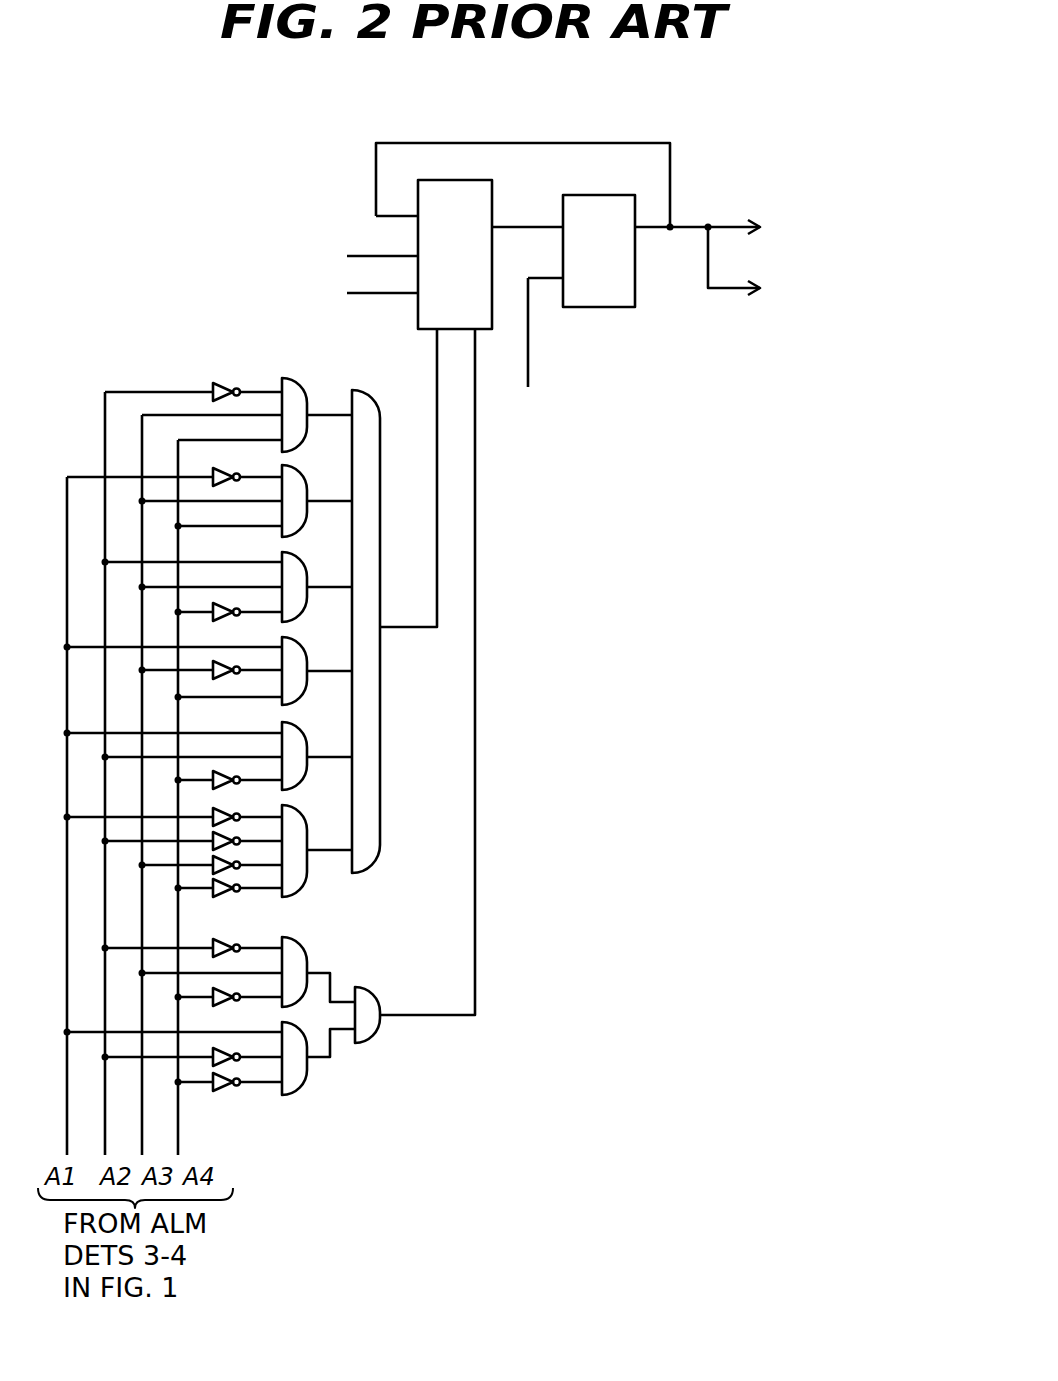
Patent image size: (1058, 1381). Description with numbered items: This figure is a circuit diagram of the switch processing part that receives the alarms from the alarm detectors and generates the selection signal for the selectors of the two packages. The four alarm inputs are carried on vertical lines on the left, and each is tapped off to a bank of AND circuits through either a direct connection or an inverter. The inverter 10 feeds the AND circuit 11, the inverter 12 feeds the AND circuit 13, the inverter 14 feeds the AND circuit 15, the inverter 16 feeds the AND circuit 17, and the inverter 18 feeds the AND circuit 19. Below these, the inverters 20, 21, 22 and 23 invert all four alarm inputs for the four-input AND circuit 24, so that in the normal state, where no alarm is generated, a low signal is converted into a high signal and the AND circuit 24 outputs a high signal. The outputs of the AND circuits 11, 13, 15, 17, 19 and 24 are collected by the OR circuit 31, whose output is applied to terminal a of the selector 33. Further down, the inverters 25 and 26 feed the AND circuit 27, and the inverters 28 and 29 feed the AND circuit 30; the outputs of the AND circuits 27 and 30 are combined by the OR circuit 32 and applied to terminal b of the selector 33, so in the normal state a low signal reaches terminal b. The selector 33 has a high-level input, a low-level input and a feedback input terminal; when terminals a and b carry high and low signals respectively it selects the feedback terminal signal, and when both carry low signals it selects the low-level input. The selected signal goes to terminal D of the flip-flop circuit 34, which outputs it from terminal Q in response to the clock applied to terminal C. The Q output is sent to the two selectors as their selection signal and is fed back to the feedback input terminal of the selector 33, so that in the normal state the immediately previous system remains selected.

The inverter 10 is at (223, 380).
The AND circuit 11 is at (303, 385).
The inverter 12 is at (240, 458).
The AND circuit 13 is at (298, 465).
The inverter 14 is at (223, 618).
The AND circuit 15 is at (295, 550).
The inverter 16 is at (220, 685).
The AND circuit 17 is at (297, 637).
The inverter 18 is at (230, 788).
The AND circuit 19 is at (316, 712).
The inverter 20 is at (222, 808).
The inverter 21 is at (215, 832).
The inverter 22 is at (215, 857).
The inverter 23 is at (230, 895).
The AND circuit 24 is at (295, 805).
The inverter 25 is at (230, 942).
The inverter 26 is at (223, 1002).
The AND circuit 27 is at (293, 935).
The inverter 28 is at (215, 1053).
The inverter 29 is at (230, 1083).
The AND circuit 30 is at (310, 1083).
The OR circuit 31 is at (380, 693).
The OR circuit 32 is at (375, 1037).
The selector 33 is at (478, 178).
The flip-flop circuit 34 is at (610, 308).